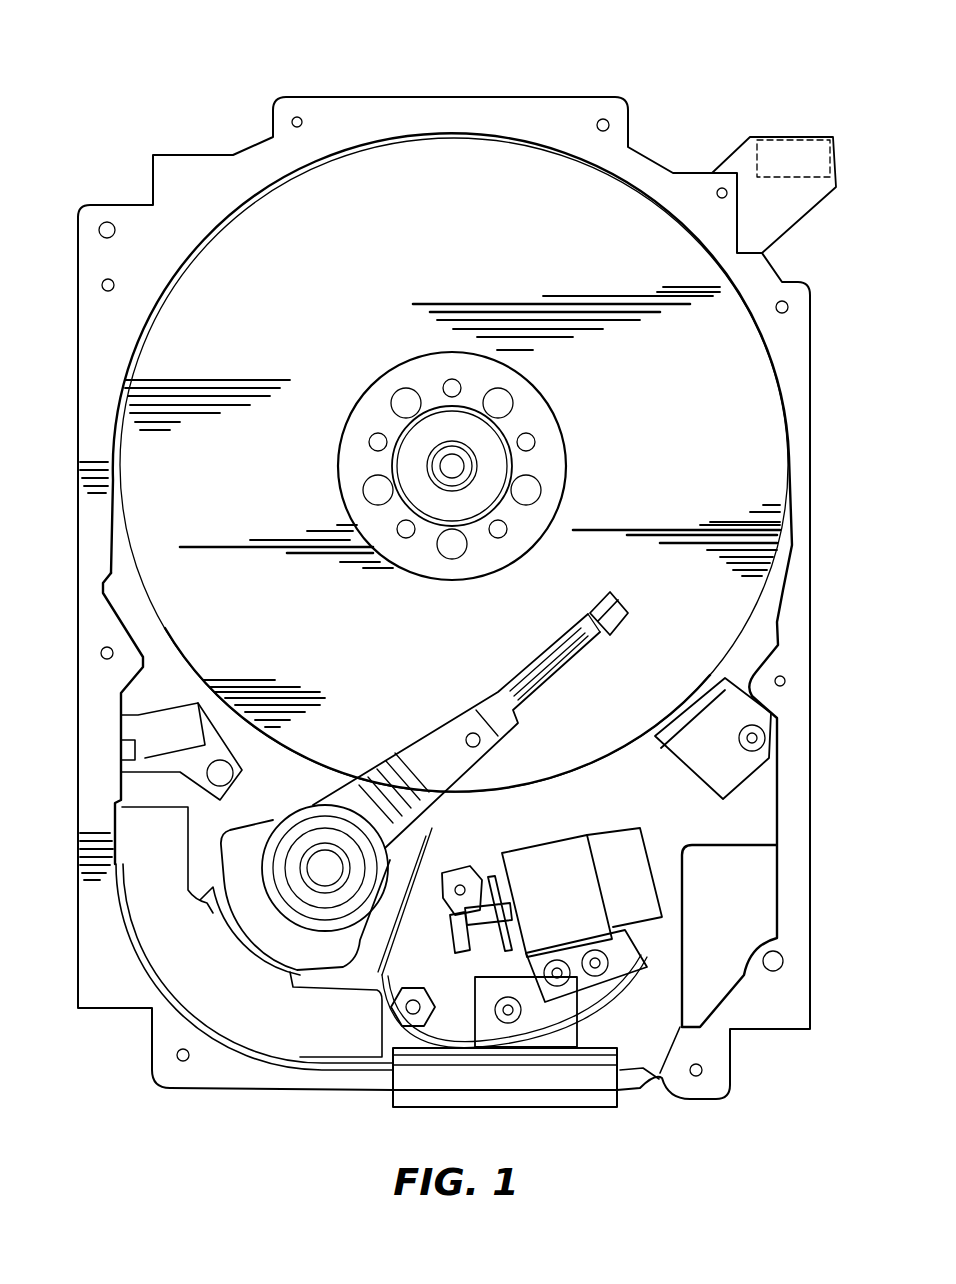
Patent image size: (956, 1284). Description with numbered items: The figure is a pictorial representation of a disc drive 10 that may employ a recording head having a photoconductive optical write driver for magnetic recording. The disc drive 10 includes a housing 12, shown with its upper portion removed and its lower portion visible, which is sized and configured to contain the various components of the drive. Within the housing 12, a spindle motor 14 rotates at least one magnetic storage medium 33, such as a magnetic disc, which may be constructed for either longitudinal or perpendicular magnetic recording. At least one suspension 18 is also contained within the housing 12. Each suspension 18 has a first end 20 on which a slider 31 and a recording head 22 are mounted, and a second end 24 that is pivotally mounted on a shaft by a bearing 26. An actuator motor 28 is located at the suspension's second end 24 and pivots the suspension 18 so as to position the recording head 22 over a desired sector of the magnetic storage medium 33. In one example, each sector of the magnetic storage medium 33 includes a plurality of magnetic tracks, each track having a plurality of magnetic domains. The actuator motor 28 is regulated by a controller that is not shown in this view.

The disc drive 10 is at (457, 576).
The housing 12 is at (585, 112).
The spindle motor 14 is at (447, 470).
The suspension 18 is at (437, 753).
The first end 20 is at (552, 642).
The recording head 22 is at (613, 603).
The second end 24 is at (348, 808).
The bearing 26 is at (315, 860).
The actuator motor 28 is at (192, 981).
The slider 31 is at (597, 613).
The magnetic storage medium 33 is at (340, 268).